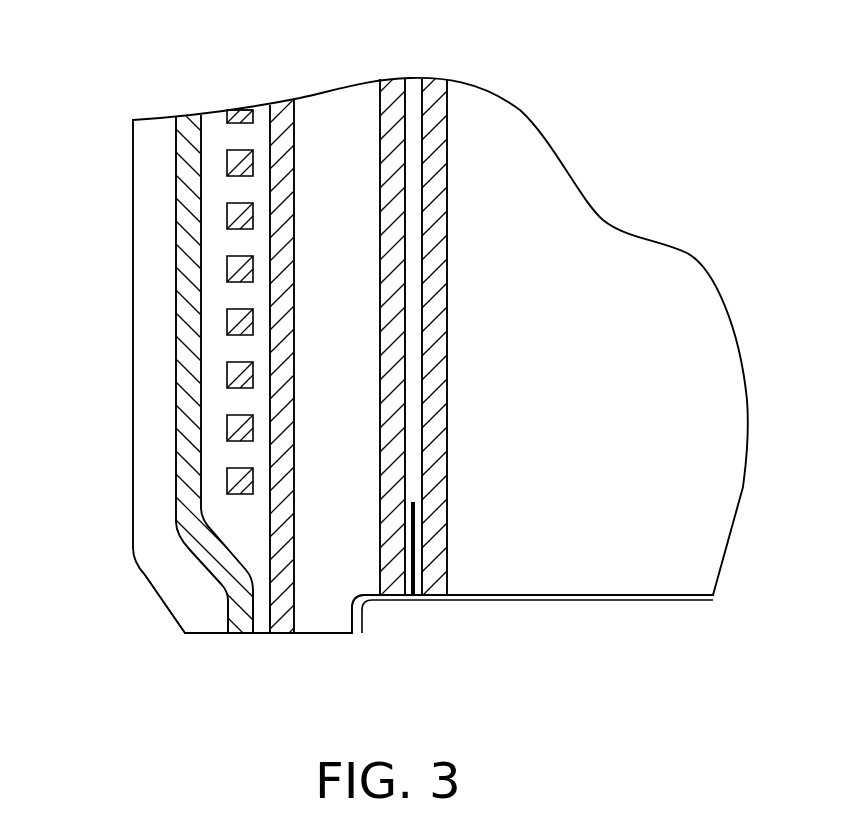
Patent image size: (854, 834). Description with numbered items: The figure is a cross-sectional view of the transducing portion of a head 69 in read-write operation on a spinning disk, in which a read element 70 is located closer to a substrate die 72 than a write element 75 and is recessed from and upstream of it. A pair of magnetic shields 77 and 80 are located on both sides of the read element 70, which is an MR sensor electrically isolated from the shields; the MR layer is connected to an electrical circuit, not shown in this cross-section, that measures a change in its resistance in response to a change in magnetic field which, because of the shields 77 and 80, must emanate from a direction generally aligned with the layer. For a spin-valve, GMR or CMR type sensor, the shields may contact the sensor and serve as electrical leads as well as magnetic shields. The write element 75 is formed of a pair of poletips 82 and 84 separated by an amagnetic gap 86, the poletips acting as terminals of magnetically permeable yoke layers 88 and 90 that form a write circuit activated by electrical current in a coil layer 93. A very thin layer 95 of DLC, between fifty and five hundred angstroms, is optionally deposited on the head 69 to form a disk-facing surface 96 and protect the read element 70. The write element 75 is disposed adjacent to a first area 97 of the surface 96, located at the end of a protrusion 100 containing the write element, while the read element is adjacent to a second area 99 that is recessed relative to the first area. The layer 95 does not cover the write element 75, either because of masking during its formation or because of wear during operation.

The head 69 is at (658, 189).
The substrate die 72 is at (541, 456).
The yoke layer 88 is at (176, 166).
The coil layer 93 is at (227, 267).
The yoke layer 90 is at (266, 124).
The poletip 84 is at (285, 635).
The amagnetic gap 86 is at (262, 635).
The poletip 82 is at (238, 635).
The first area 97 is at (193, 635).
The protrusion 100 is at (187, 619).
The write element 75 is at (212, 613).
The magnetic shield 77 is at (407, 243).
The magnetic shield 80 is at (447, 281).
The read element 70 is at (416, 557).
The second area 99 is at (496, 601).
The layer of DLC 95 is at (357, 618).
The disk-facing surface 96 is at (552, 599).